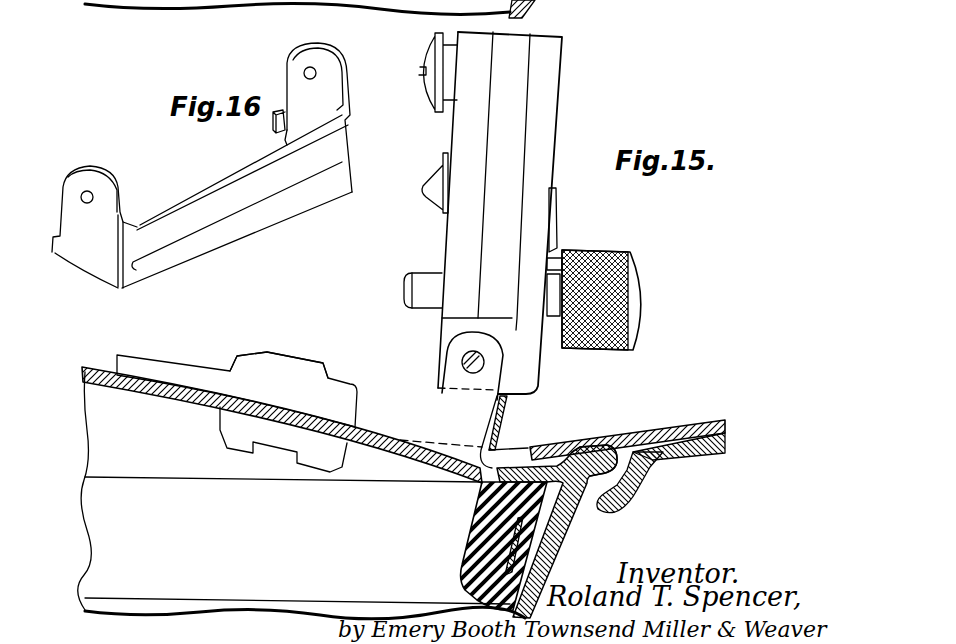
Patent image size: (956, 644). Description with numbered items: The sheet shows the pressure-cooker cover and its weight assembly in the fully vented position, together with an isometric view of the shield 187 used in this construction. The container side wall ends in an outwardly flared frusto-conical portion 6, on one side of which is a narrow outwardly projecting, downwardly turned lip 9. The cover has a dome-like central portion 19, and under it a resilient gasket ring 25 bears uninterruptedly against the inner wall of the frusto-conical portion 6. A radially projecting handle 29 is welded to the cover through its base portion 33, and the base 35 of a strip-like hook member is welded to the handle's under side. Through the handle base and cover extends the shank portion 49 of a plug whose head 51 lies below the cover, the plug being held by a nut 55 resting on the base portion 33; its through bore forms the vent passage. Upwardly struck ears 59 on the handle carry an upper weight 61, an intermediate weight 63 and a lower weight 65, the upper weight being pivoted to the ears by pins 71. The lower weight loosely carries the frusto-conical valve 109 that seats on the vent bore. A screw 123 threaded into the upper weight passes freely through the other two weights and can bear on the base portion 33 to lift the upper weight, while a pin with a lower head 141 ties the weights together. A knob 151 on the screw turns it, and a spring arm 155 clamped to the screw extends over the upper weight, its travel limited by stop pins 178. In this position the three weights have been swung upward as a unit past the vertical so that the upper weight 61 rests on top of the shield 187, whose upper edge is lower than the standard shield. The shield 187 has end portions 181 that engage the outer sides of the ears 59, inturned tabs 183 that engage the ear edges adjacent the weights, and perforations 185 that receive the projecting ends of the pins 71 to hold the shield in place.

In FIG. 15, the frusto-conical portion 6 is at (557, 533).
In FIG. 15, the lip 9 is at (606, 466).
In FIG. 15, the dome-like central portion 19 is at (83, 370).
In FIG. 15, the gasket ring 25 is at (477, 513).
In FIG. 15, the handle 29 is at (655, 434).
In FIG. 15, the base portion 33 is at (282, 404).
In FIG. 15, the base 35 is at (684, 458).
In FIG. 15, the shank portion 49 is at (318, 352).
In FIG. 15, the head 51 is at (227, 414).
In FIG. 15, the nut 55 is at (237, 364).
In FIG. 15, the ears 59 is at (432, 390).
In FIG. 15, the upper weight 61 is at (546, 54).
In FIG. 15, the intermediate weight 63 is at (510, 96).
In FIG. 15, the lower weight 65 is at (475, 150).
In FIG. 15, the pins 71 is at (462, 358).
In FIG. 15, the frusto-conical valve 109 is at (440, 178).
In FIG. 15, the screw 123 is at (423, 280).
In FIG. 15, the head 141 is at (432, 48).
In FIG. 15, the knob 151 is at (596, 255).
In FIG. 15, the spring arm 155 is at (560, 215).
In FIG. 15, the stop pins 178 is at (563, 255).
In FIG. 16, the portions 181 is at (303, 62).
In FIG. 16, the inturned tabs 183 is at (273, 123).
In FIG. 15, the inturned tabs 183 is at (417, 423).
In FIG. 16, the perforations 185 is at (81, 197).
In FIG. 16, the shield 187 is at (262, 212).
In FIG. 15, the shield 187 is at (507, 420).